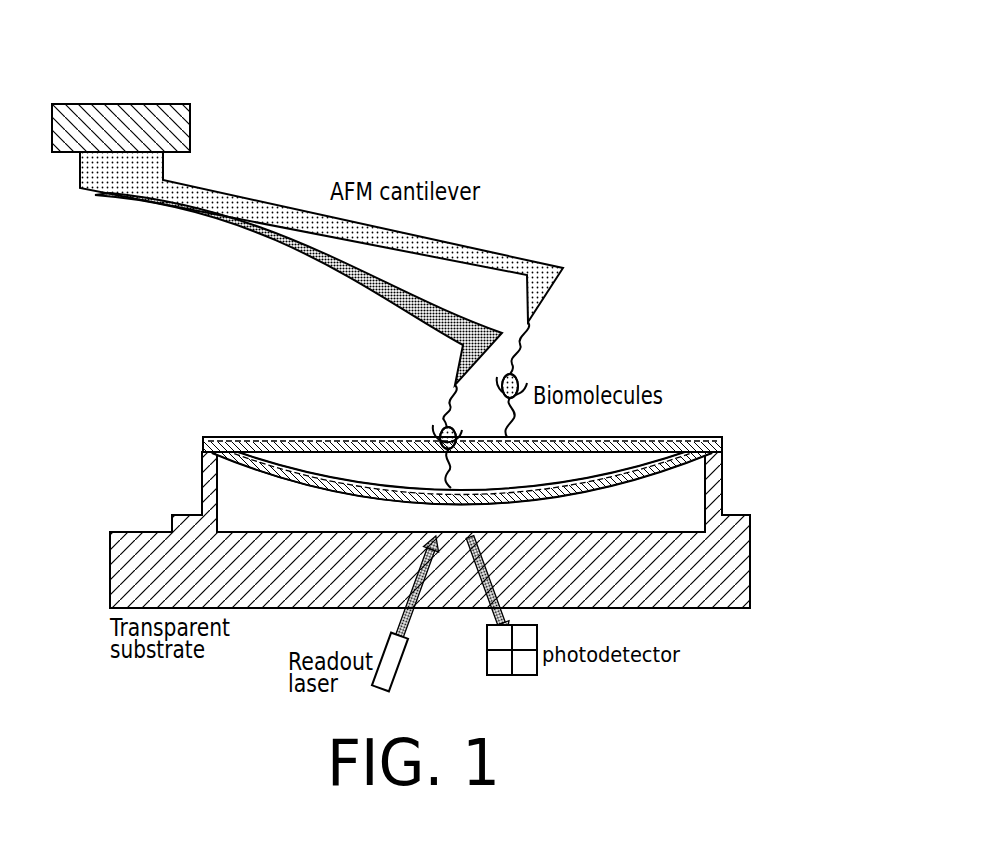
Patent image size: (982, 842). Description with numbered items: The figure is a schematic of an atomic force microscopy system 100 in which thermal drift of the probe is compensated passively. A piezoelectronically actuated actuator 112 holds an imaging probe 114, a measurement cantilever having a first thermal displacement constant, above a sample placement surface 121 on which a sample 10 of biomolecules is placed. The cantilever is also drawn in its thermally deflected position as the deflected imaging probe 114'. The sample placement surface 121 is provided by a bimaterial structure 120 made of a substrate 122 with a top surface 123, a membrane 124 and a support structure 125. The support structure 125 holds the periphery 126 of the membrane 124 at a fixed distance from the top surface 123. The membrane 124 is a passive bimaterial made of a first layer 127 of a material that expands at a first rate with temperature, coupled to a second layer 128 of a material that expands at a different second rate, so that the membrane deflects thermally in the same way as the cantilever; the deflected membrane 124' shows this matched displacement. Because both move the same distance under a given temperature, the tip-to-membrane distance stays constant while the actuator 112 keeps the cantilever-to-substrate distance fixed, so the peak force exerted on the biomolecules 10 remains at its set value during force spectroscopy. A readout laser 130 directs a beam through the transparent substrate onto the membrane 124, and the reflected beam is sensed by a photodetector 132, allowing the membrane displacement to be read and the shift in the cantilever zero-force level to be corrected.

The atomic force microscopy system 100 is at (611, 176).
The piezoelectronically actuated actuator 112 is at (131, 86).
The imaging probe 114 is at (321, 237).
The deflected imaging probe 114' is at (298, 289).
The sample 10 is at (433, 428).
The bimaterial structure 120 is at (157, 522).
The sample placement surface 121 is at (525, 438).
The substrate 122 is at (742, 515).
The top surface 123 is at (293, 531).
The membrane 124 is at (462, 444).
The deflected membrane 124' is at (461, 475).
The support structure 125 is at (201, 473).
The periphery 126 is at (212, 437).
The first layer 127 is at (404, 438).
The second layer 128 is at (400, 453).
The readout laser 130 is at (397, 664).
The photodetector 132 is at (487, 672).